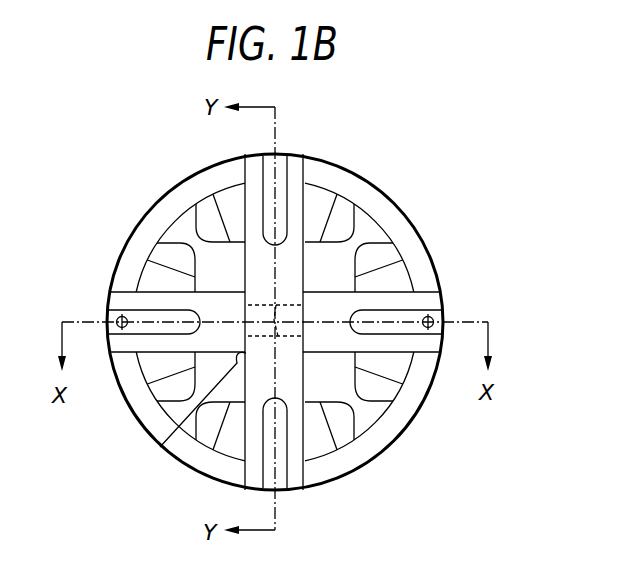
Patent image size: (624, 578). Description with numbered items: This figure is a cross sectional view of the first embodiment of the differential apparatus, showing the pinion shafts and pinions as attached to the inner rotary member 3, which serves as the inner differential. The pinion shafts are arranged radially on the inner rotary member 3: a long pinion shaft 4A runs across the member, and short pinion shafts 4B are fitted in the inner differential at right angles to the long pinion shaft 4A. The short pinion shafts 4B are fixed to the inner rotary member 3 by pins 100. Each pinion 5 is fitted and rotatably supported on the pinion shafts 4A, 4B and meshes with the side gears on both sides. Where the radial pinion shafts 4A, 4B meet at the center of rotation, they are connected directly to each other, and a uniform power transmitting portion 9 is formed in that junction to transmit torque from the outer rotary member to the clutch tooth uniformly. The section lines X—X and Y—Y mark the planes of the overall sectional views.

The inner rotary member 3 is at (162, 206).
The long pinion shaft 4A is at (300, 155).
The short pinion shaft 4B is at (108, 302).
The pinion 5 is at (328, 193).
The uniform power transmitting portion 9 is at (274, 338).
The pin 100 is at (117, 303).